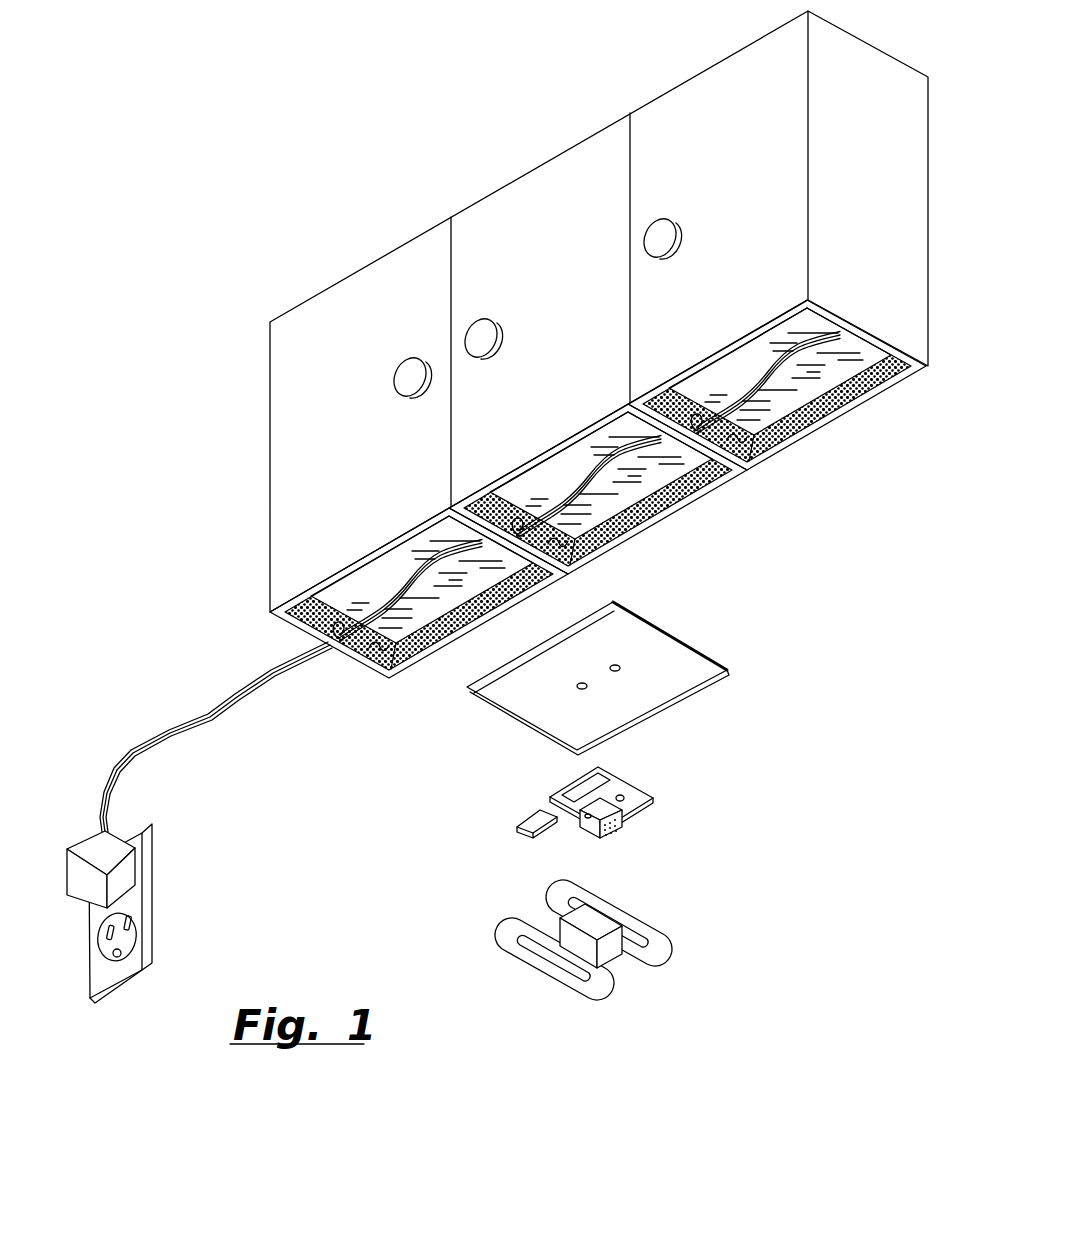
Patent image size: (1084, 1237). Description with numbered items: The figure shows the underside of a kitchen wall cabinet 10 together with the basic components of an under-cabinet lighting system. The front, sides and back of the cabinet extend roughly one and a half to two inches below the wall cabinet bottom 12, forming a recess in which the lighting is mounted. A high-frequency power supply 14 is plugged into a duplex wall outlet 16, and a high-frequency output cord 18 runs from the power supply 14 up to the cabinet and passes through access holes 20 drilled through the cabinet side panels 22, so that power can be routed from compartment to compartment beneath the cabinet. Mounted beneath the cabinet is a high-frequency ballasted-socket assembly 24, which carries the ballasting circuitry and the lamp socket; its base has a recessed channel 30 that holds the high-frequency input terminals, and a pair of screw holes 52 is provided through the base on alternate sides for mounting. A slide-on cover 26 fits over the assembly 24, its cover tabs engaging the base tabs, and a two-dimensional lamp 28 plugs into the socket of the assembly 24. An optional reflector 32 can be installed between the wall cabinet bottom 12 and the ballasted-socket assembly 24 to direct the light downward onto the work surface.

The kitchen wall cabinet 10 is at (657, 92).
The wall cabinet bottom 12 is at (457, 595).
The high-frequency power supply 14 is at (118, 824).
The duplex wall outlet 16 is at (153, 923).
The high-frequency output cord 18 is at (200, 716).
The access holes 20 is at (341, 633).
The cabinet side panels 22 is at (400, 650).
The high-frequency ballasted-socket assembly 24 is at (643, 810).
The slide-on cover 26 is at (515, 827).
The 2D lamp 28 is at (667, 910).
The recessed channel 30 is at (634, 785).
The reflector 32 is at (699, 643).
The screw holes 52 is at (618, 668).